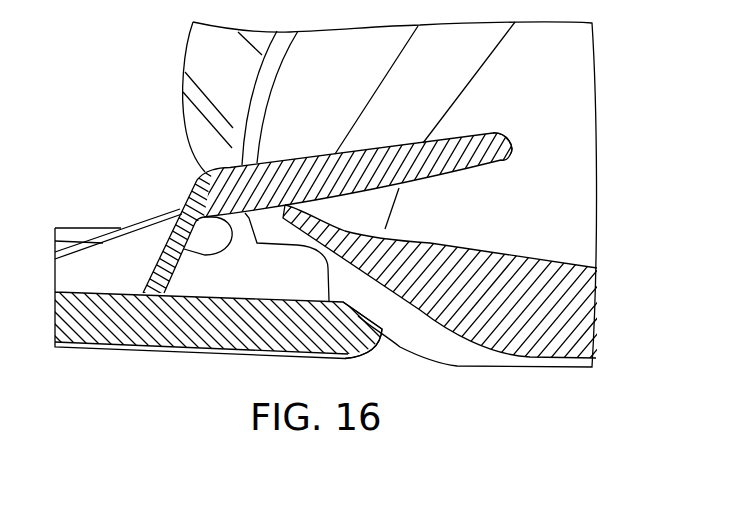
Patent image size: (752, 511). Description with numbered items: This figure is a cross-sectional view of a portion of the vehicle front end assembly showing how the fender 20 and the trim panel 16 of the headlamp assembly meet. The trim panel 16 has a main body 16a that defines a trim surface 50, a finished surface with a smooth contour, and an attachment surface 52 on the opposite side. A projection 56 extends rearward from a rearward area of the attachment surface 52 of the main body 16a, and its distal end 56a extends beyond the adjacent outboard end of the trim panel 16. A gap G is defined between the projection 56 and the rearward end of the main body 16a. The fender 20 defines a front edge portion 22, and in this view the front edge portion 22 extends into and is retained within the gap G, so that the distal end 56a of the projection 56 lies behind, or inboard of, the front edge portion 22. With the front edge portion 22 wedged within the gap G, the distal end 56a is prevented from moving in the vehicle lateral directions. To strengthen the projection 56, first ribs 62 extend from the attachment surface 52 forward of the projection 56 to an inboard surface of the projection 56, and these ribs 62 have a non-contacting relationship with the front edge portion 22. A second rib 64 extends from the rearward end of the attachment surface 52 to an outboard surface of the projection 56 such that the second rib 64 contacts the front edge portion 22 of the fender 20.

The fender 20 is at (550, 75).
The front edge portion 22 is at (297, 217).
The projection 56 is at (385, 158).
The distal end 56a is at (513, 147).
The trim panel 16 is at (93, 347).
The main body 16a is at (342, 330).
The trim surface 50 is at (148, 353).
The attachment surface 52 is at (84, 291).
The first ribs 62 is at (112, 268).
The gap G is at (166, 249).
The second rib 64 is at (222, 277).